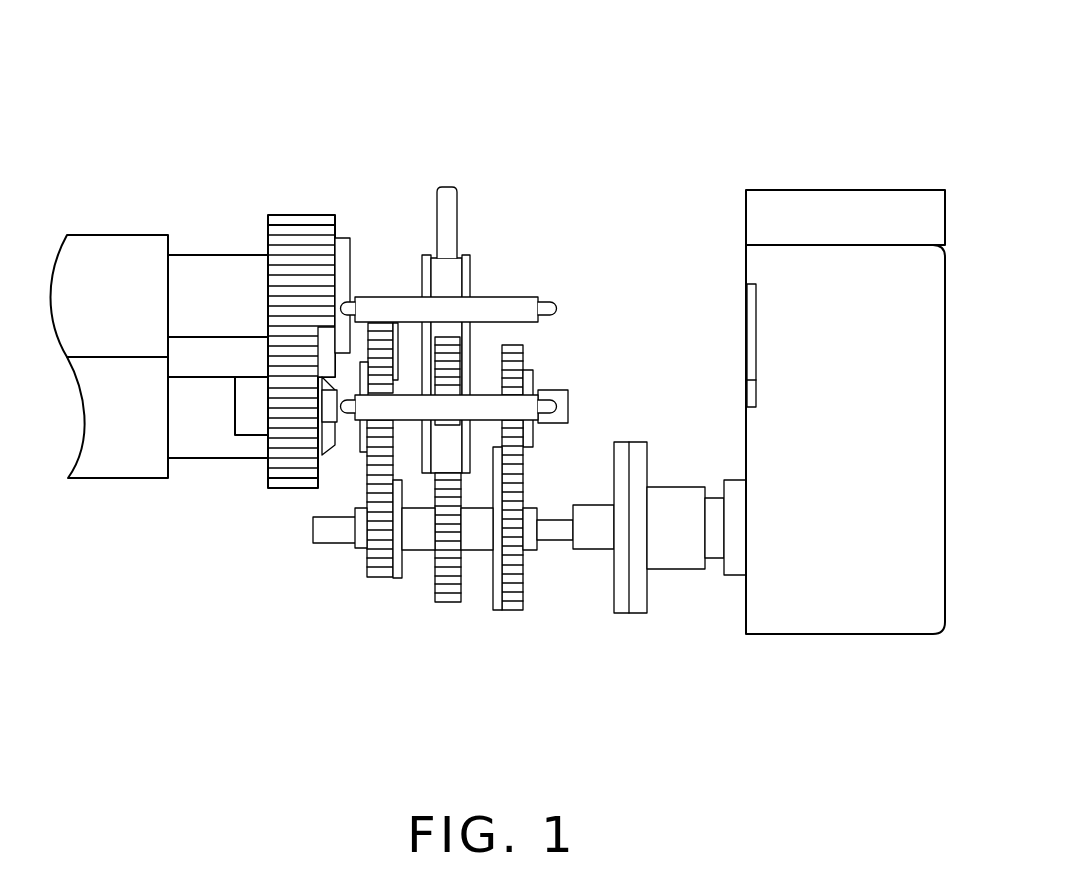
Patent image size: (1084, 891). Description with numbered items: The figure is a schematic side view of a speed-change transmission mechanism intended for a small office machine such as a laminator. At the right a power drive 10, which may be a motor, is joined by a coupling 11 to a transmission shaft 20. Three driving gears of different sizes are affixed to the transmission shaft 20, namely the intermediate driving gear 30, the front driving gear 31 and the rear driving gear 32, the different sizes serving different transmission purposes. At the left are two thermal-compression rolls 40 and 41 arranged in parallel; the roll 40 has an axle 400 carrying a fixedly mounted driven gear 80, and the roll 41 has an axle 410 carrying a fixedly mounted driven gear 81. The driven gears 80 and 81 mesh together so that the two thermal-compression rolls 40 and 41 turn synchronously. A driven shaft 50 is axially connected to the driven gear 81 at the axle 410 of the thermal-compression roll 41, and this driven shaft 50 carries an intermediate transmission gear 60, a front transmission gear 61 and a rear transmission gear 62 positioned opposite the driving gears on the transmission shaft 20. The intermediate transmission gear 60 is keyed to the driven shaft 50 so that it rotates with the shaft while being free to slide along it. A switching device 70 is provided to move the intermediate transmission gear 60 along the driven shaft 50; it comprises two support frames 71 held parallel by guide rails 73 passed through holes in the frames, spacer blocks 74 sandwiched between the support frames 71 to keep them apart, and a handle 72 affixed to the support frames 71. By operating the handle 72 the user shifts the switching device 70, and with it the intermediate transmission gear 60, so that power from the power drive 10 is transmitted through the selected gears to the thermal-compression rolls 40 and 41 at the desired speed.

The power drive 10 is at (850, 605).
The coupling 11 is at (640, 615).
The transmission shaft 20 is at (333, 530).
The intermediate driving gear 30 is at (449, 587).
The front driving gear 31 is at (379, 568).
The rear driving gear 32 is at (513, 592).
The thermal-compression roll 40 is at (109, 252).
The thermal-compression roll 41 is at (112, 465).
The axle 400 is at (216, 277).
The axle 410 is at (195, 457).
The driven shaft 50 is at (591, 401).
The intermediate transmission gear 60 is at (452, 340).
The front transmission gear 61 is at (380, 343).
The rear transmission gear 62 is at (518, 358).
The switching device 70 is at (471, 243).
The support frame 71 is at (466, 254).
The handle 72 is at (442, 187).
The guide rail 73 is at (492, 302).
The spacer block 74 is at (437, 433).
The driven gear 80 is at (298, 235).
The driven gear 81 is at (280, 472).